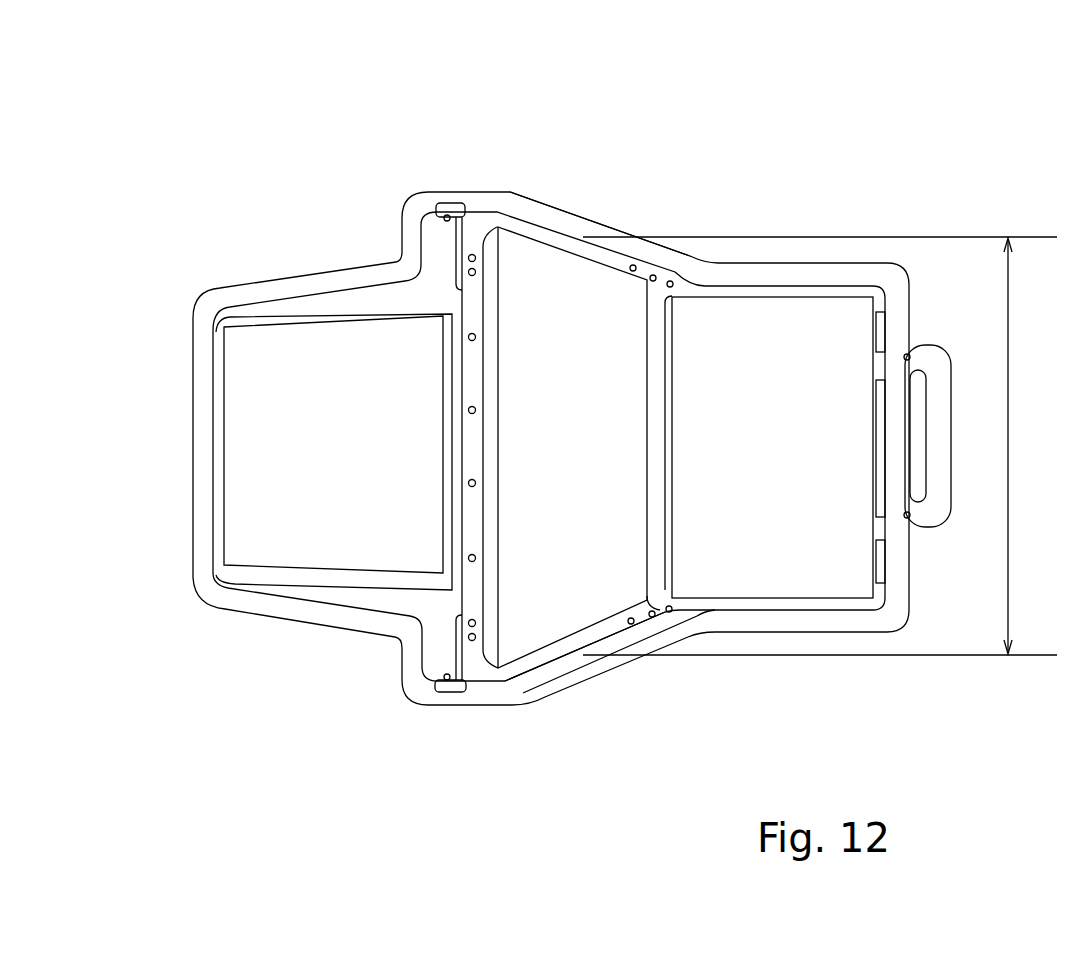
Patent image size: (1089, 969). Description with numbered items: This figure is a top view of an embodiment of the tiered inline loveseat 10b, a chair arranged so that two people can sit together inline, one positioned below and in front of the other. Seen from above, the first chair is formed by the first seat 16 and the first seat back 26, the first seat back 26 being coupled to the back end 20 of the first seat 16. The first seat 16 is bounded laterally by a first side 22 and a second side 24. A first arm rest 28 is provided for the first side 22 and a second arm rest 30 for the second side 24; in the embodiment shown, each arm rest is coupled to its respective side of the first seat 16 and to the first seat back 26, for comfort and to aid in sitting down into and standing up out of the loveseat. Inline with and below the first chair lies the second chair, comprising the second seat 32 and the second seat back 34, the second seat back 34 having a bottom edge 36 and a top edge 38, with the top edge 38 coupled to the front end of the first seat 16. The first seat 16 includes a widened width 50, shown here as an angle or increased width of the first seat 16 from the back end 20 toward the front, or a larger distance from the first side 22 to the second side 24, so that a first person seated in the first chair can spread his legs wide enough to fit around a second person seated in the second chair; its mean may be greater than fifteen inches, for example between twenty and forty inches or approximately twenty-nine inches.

The tiered inline loveseat 10b is at (262, 142).
The first seat 16 is at (514, 580).
The back end 20 is at (651, 328).
The first side 22 is at (596, 640).
The second side 24 is at (546, 228).
The first seat back 26 is at (786, 584).
The first arm rest 28 is at (562, 720).
The second arm rest 30 is at (483, 178).
The second seat 32 is at (264, 394).
The second seat back 34 is at (412, 354).
The bottom edge 36 is at (384, 340).
The top edge 38 is at (437, 360).
The widened width 50 is at (1010, 407).